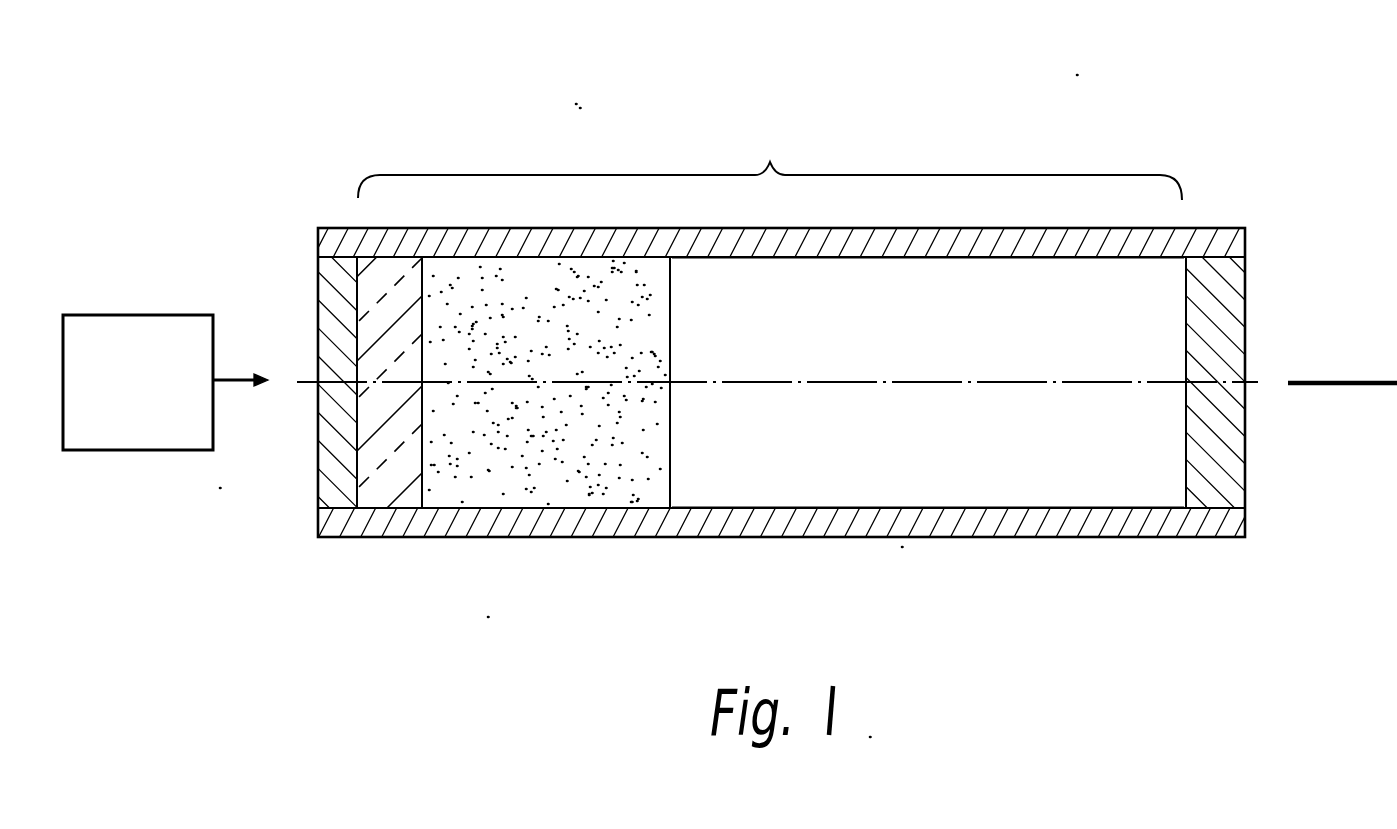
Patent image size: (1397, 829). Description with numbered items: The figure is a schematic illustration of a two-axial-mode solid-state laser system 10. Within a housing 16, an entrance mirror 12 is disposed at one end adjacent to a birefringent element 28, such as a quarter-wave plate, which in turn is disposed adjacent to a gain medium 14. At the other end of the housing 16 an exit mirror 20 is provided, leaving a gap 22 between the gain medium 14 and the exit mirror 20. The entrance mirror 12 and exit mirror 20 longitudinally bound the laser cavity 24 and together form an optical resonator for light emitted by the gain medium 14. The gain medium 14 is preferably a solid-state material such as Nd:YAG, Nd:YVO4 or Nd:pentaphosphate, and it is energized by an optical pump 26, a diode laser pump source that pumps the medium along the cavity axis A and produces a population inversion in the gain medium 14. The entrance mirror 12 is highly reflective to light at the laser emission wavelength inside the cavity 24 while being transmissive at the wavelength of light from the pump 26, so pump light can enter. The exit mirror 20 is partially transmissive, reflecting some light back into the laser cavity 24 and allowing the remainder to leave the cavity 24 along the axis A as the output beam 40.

The laser system 10 is at (1045, 138).
The entrance mirror 12 is at (318, 480).
The gain medium 14 is at (557, 492).
The housing 16 is at (957, 228).
The exit mirror 20 is at (1246, 482).
The gap 22 is at (883, 465).
The laser cavity 24 is at (770, 164).
The optical pump 26 is at (150, 395).
The birefringent element 28 is at (400, 495).
The output beam 40 is at (1345, 386).
The cavity axis A is at (826, 382).